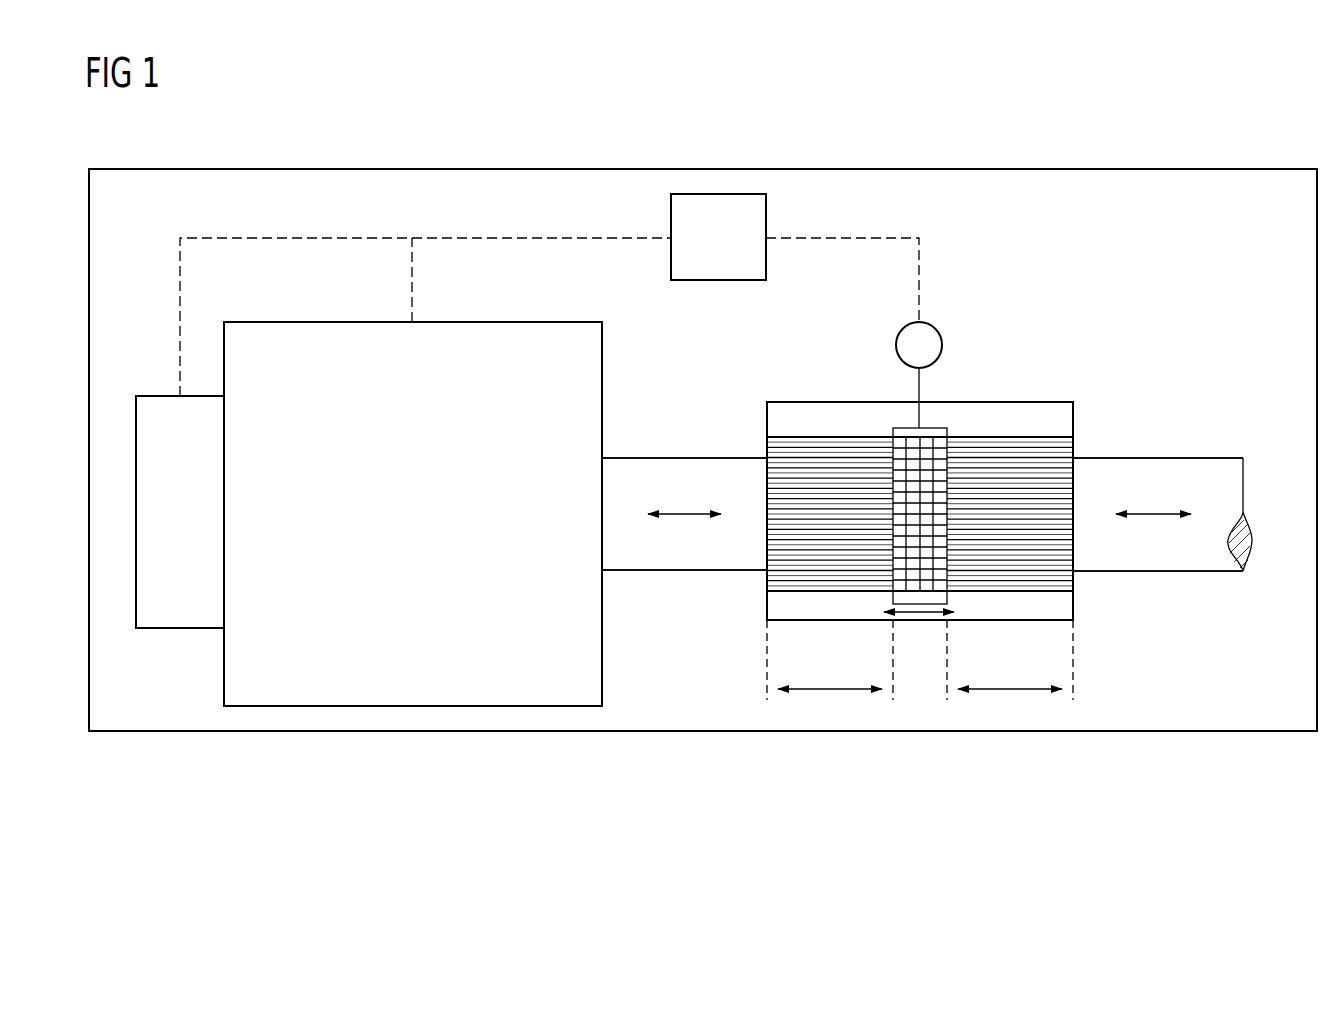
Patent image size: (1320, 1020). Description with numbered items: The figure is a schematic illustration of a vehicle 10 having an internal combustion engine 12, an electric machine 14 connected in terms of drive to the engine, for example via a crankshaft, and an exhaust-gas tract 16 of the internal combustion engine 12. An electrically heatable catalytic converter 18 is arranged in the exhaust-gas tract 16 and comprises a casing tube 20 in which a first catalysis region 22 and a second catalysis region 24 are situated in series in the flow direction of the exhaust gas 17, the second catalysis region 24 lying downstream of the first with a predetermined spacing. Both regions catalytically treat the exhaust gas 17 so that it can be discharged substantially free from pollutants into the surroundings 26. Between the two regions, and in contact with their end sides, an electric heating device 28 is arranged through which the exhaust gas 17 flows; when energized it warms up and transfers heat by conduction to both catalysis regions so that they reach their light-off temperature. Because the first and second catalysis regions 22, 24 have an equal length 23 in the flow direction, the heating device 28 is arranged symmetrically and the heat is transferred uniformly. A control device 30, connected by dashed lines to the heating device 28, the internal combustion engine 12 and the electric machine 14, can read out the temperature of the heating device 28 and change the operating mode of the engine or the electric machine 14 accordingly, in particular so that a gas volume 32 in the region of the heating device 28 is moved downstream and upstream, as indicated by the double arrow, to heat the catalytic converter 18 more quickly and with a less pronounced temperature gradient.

The vehicle 10 is at (783, 169).
The internal combustion engine 12 is at (292, 707).
The electric machine 14 is at (178, 630).
The exhaust-gas tract 16 is at (698, 630).
The exhaust gas 17 is at (623, 553).
The electrically heatable catalytic converter 18 is at (1074, 360).
The casing tube 20 is at (1023, 402).
The first catalysis region 22 is at (828, 577).
The length 23 is at (830, 692).
The second catalysis region 24 is at (1013, 578).
The surroundings 26 is at (1228, 430).
The electric heating device 28 is at (928, 440).
The control device 30 is at (718, 194).
The gas volume 32 is at (899, 428).